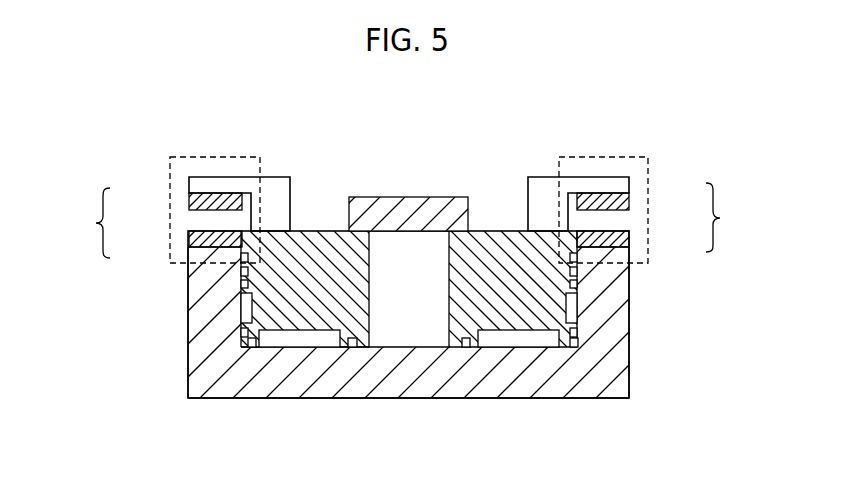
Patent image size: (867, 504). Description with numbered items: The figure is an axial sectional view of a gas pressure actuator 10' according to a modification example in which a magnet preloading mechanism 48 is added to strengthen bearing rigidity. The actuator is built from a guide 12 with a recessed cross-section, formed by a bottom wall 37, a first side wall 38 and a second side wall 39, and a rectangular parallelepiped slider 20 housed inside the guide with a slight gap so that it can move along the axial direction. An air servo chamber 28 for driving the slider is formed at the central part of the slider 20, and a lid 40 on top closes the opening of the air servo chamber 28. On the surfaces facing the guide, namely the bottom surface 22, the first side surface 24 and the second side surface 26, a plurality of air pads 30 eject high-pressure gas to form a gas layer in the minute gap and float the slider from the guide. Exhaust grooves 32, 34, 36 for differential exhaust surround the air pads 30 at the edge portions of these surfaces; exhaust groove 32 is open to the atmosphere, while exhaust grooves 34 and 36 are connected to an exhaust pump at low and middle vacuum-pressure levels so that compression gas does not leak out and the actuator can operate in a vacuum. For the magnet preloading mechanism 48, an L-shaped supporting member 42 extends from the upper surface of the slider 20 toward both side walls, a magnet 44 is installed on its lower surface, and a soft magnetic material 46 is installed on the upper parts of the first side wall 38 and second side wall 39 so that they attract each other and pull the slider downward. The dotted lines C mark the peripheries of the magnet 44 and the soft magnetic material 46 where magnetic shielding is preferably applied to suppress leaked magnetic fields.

The gas pressure actuator 10' is at (327, 274).
The guide 12 is at (588, 382).
The slider 20 is at (495, 242).
The bottom surface 22 is at (364, 346).
The first side surface 24 is at (616, 347).
The second side surface 26 is at (246, 342).
The air servo chamber 28 is at (408, 320).
The air pads 30 is at (262, 334).
The exhaust groove 32 is at (242, 295).
The exhaust groove 34 is at (243, 271).
The exhaust groove 36 is at (242, 255).
The bottom wall 37 is at (360, 346).
The first side wall 38 is at (616, 320).
The second side wall 39 is at (202, 325).
The lid 40 is at (390, 205).
The supporting member 42 is at (243, 187).
The magnet 44 is at (195, 202).
The soft magnetic material 46 is at (195, 239).
The magnet preloading mechanism 48 is at (411, 220).
The dotted lines C is at (193, 157).